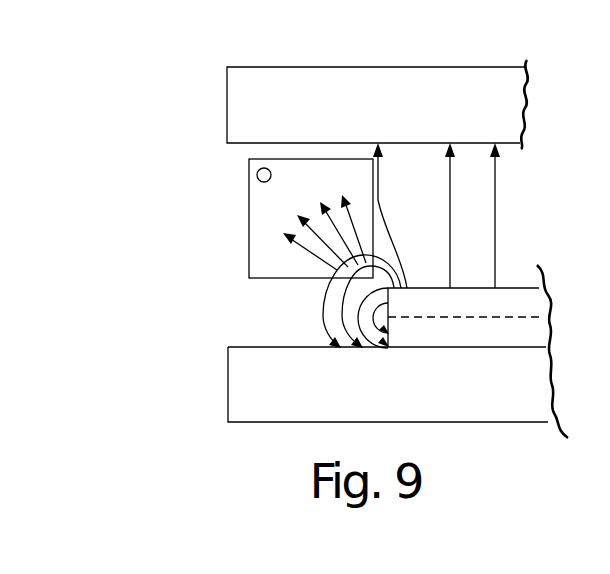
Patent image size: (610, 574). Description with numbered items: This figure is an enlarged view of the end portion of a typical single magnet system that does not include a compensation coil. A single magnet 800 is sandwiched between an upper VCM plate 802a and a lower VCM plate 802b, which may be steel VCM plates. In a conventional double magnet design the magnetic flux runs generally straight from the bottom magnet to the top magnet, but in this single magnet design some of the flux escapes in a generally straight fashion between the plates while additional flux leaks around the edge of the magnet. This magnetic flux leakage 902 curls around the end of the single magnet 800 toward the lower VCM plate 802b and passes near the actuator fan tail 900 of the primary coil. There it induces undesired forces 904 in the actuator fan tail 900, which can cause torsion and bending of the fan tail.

The upper VCM plate 802a is at (227, 108).
The lower VCM plate 802b is at (228, 381).
The single magnet 800 is at (512, 283).
The actuator fan tail 900 is at (249, 247).
The magnetic flux leakage 902 is at (296, 307).
The undesired forces 904 is at (264, 199).